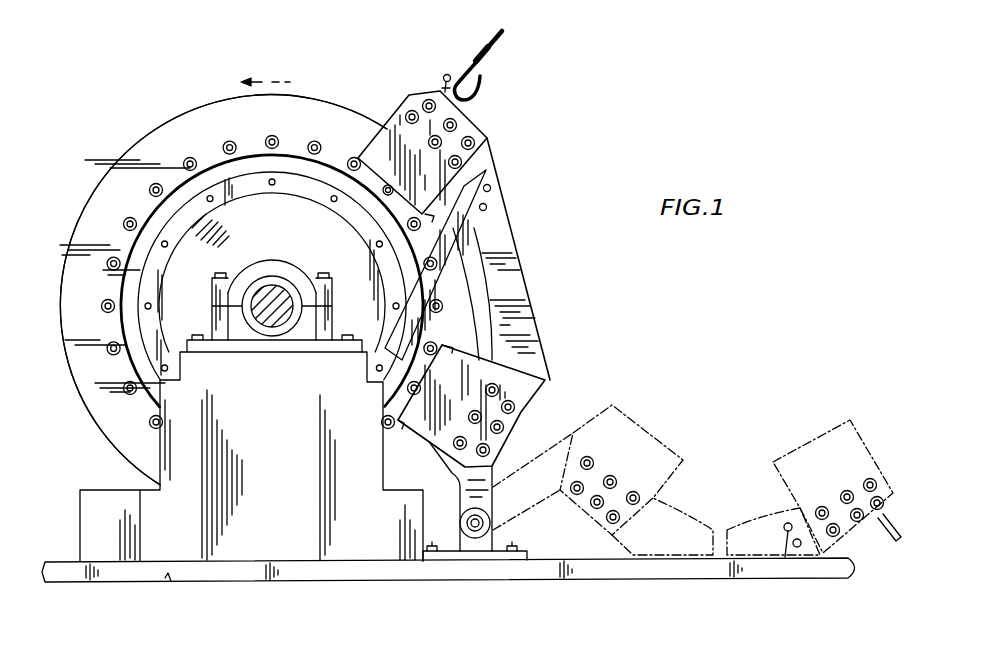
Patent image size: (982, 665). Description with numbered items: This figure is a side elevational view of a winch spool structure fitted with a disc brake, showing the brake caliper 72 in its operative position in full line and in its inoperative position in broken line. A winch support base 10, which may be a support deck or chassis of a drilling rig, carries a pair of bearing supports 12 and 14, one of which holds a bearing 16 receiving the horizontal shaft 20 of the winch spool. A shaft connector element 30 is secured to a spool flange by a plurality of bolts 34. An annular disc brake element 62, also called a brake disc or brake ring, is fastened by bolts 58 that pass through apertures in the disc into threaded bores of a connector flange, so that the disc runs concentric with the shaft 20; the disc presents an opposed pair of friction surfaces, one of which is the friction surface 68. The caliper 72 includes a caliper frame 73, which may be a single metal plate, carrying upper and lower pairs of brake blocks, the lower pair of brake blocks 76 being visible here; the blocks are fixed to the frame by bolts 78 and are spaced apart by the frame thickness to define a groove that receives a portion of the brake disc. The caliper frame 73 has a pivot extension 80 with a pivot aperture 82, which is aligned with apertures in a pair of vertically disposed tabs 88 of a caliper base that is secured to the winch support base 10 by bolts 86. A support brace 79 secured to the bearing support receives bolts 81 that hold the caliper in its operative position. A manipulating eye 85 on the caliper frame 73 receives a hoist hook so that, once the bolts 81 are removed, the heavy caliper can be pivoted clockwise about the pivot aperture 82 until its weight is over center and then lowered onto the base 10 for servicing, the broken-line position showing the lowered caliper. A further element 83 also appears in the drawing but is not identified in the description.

The winch support base 10 is at (58, 560).
The bearing support 12 is at (95, 490).
The bearing support 14 is at (422, 87).
The bearing 16 is at (283, 272).
The horizontal shaft 20 is at (277, 318).
The shaft connector element 30 is at (261, 239).
The bolts 34 is at (165, 247).
The bolts 58 is at (110, 350).
The disc brake element 62 is at (95, 218).
The friction surface 68 is at (112, 166).
The brake caliper 72 is at (752, 522).
The caliper frame 73 is at (512, 250).
The lower pair of brake blocks 76 is at (519, 393).
The bolts 78 is at (470, 140).
The support brace 79 is at (452, 270).
The pivot extension 80 is at (465, 473).
The bolts 81 is at (487, 206).
The pivot aperture 82 is at (478, 538).
The bolt 83 is at (790, 545).
The manipulating eye 85 is at (458, 74).
The bolts 86 is at (430, 552).
The vertically disposed tabs 88 is at (460, 556).